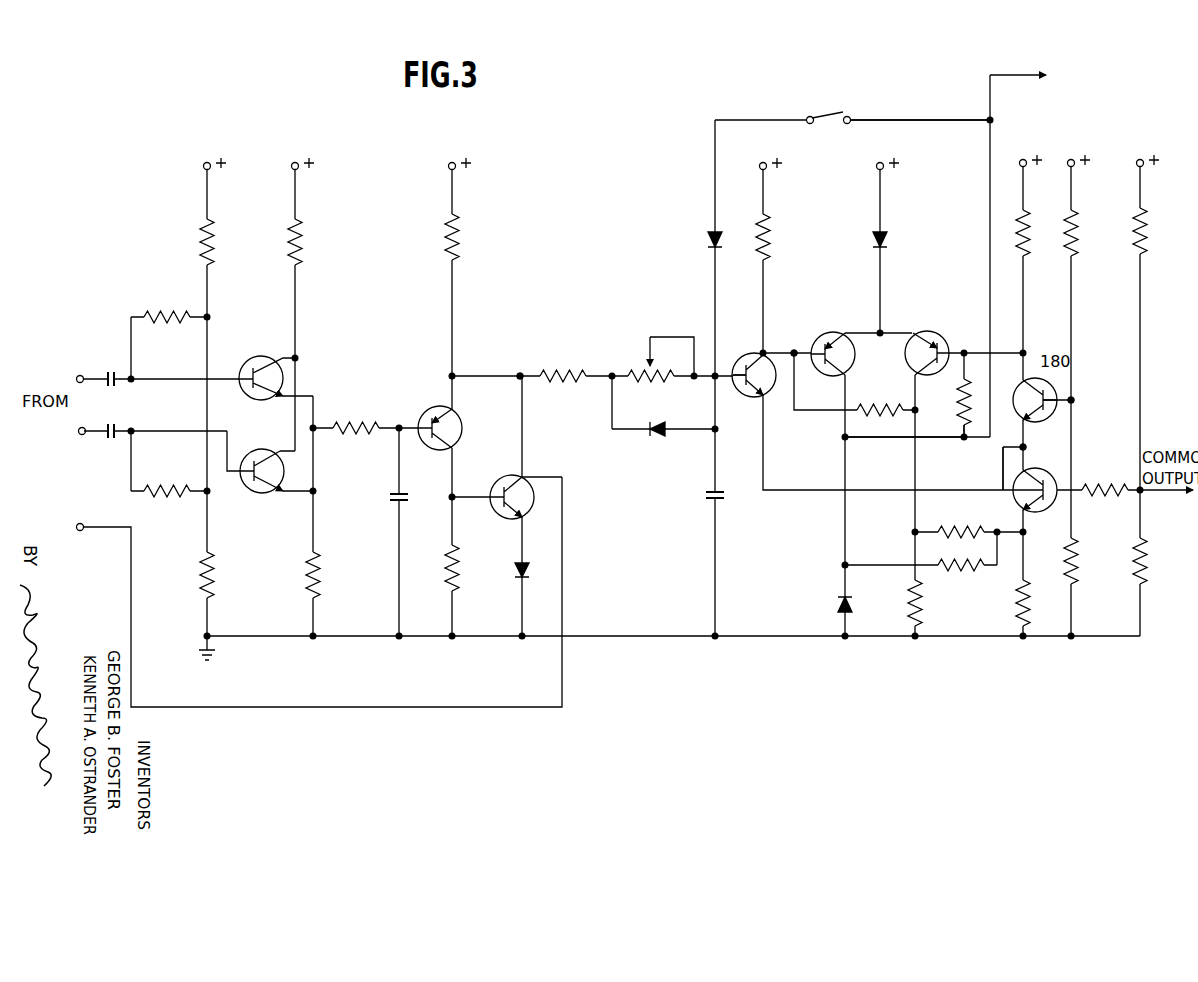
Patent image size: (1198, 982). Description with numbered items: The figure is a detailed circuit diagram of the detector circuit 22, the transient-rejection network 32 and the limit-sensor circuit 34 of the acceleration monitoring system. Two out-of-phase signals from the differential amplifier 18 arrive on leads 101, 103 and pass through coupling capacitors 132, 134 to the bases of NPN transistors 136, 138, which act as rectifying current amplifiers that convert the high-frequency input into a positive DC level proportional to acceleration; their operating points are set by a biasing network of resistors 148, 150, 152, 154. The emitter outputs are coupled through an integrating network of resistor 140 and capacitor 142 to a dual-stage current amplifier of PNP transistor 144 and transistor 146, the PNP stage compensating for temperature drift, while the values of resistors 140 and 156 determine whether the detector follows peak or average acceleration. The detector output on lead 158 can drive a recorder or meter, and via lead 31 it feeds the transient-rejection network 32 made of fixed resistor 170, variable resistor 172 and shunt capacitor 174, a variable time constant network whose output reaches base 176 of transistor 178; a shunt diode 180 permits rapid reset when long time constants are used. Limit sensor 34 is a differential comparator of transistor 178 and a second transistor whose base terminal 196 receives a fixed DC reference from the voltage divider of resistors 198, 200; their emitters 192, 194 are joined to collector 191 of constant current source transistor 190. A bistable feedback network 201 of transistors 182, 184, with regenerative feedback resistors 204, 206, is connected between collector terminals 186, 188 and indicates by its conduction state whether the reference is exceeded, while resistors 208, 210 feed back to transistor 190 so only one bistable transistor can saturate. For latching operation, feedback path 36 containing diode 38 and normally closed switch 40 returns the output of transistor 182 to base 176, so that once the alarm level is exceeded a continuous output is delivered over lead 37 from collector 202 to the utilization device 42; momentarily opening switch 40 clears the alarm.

The differential amplifier 18 is at (46, 419).
The detector circuit 22 is at (378, 331).
The lead 31 is at (531, 369).
The transient-rejection network 32 is at (597, 316).
The limit-sensor circuit 34 is at (790, 551).
The feedback path 36 is at (933, 116).
The lead 37 is at (993, 98).
The diode 38 is at (706, 256).
The switch 40 is at (839, 114).
The utilization device 42 is at (1082, 74).
The lead 101 is at (74, 377).
The lead 103 is at (79, 434).
The coupling capacitor 132 is at (105, 370).
The coupling capacitor 134 is at (110, 440).
The transistor 136 is at (277, 401).
The transistor 138 is at (259, 446).
The resistor 140 is at (355, 414).
The capacitor 142 is at (388, 506).
The PNP transistor 144 is at (459, 412).
The transistor 146 is at (527, 471).
The resistor 148 is at (214, 250).
The resistor 150 is at (178, 310).
The resistor 152 is at (181, 482).
The resistor 154 is at (218, 574).
The resistor 156 is at (320, 574).
The lead 158 is at (562, 582).
The fixed resistor 170 is at (578, 369).
The variable resistor 172 is at (634, 366).
The shunt capacitor 174 is at (702, 506).
The base 176 is at (722, 367).
The transistor 178 is at (746, 412).
The shunt diode 180 is at (649, 437).
The transistor 182 is at (834, 340).
The transistor 184 is at (925, 333).
The collector terminal 186 is at (764, 362).
The collector terminal 188 is at (1019, 387).
The transistor 190 is at (1030, 522).
The collector 191 is at (1002, 469).
The emitter 192 is at (766, 399).
The emitter 194 is at (1026, 447).
The terminal 196 is at (1072, 400).
The resistor 198 is at (1090, 249).
The resistor 200 is at (1077, 576).
The bistable feedback network 201 is at (897, 359).
The collector 202 is at (849, 375).
The feedback resistor 204 is at (876, 437).
The feedback resistor 206 is at (955, 392).
The resistor 208 is at (979, 531).
The resistor 210 is at (975, 571).